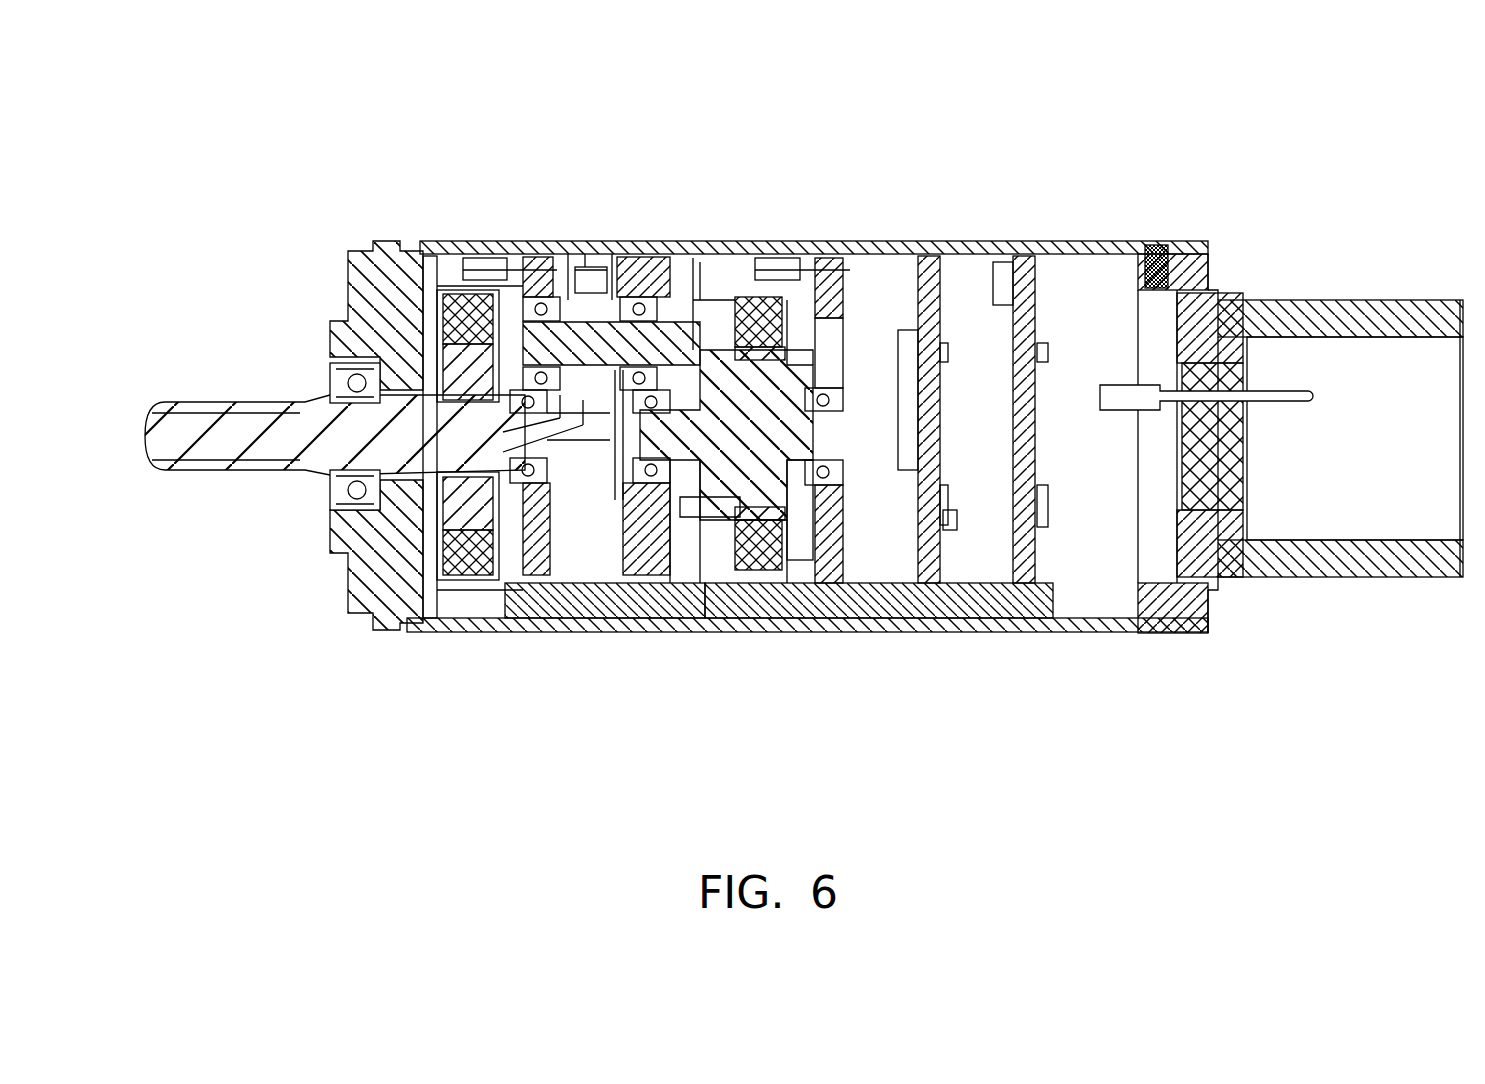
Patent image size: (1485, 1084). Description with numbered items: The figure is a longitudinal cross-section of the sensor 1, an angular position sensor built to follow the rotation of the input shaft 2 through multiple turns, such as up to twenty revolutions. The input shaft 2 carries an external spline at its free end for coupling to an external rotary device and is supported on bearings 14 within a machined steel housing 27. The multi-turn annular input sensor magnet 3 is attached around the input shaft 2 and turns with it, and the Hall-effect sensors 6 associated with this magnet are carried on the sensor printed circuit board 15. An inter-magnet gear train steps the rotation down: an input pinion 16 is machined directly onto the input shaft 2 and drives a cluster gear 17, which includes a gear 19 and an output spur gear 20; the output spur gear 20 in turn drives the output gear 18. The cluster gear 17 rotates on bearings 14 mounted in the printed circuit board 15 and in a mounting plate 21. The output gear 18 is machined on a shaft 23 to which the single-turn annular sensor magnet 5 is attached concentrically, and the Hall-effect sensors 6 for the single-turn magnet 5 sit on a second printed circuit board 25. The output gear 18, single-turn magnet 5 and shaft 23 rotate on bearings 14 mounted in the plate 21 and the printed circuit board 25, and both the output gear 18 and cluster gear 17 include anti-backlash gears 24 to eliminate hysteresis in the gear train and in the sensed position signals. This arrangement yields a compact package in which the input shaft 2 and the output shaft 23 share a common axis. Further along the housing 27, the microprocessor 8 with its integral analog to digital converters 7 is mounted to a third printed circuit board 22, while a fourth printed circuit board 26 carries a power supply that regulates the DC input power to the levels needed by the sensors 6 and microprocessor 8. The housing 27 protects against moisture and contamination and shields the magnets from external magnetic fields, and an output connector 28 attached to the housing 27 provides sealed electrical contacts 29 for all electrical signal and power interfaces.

The sensor 1 is at (325, 790).
The input shaft 2 is at (163, 455).
The multi-turn annular input sensor magnet 3 is at (466, 565).
The single-turn annular sensor magnet 5 is at (805, 300).
The Hall-effect sensors 6 is at (481, 262).
The analog to digital converters 7 is at (978, 170).
The microprocessor 8 is at (900, 330).
The bearings 14 is at (343, 493).
The sensor printed circuit board 15 is at (543, 618).
The input pinion 16 is at (568, 470).
The cluster gear 17 is at (640, 322).
The output gear 18 is at (733, 560).
The gear 19 is at (585, 254).
The output spur gear 20 is at (720, 322).
The mounting plate 21 is at (648, 540).
The third printed circuit board 22 is at (955, 633).
The shaft 23 is at (838, 465).
The anti-backlash gears 24 is at (606, 292).
The second printed circuit board 25 is at (833, 625).
The fourth printed circuit board 26 is at (1043, 633).
The housing 27 is at (342, 620).
The output connector 28 is at (1268, 555).
The electrical contacts 29 is at (1290, 402).